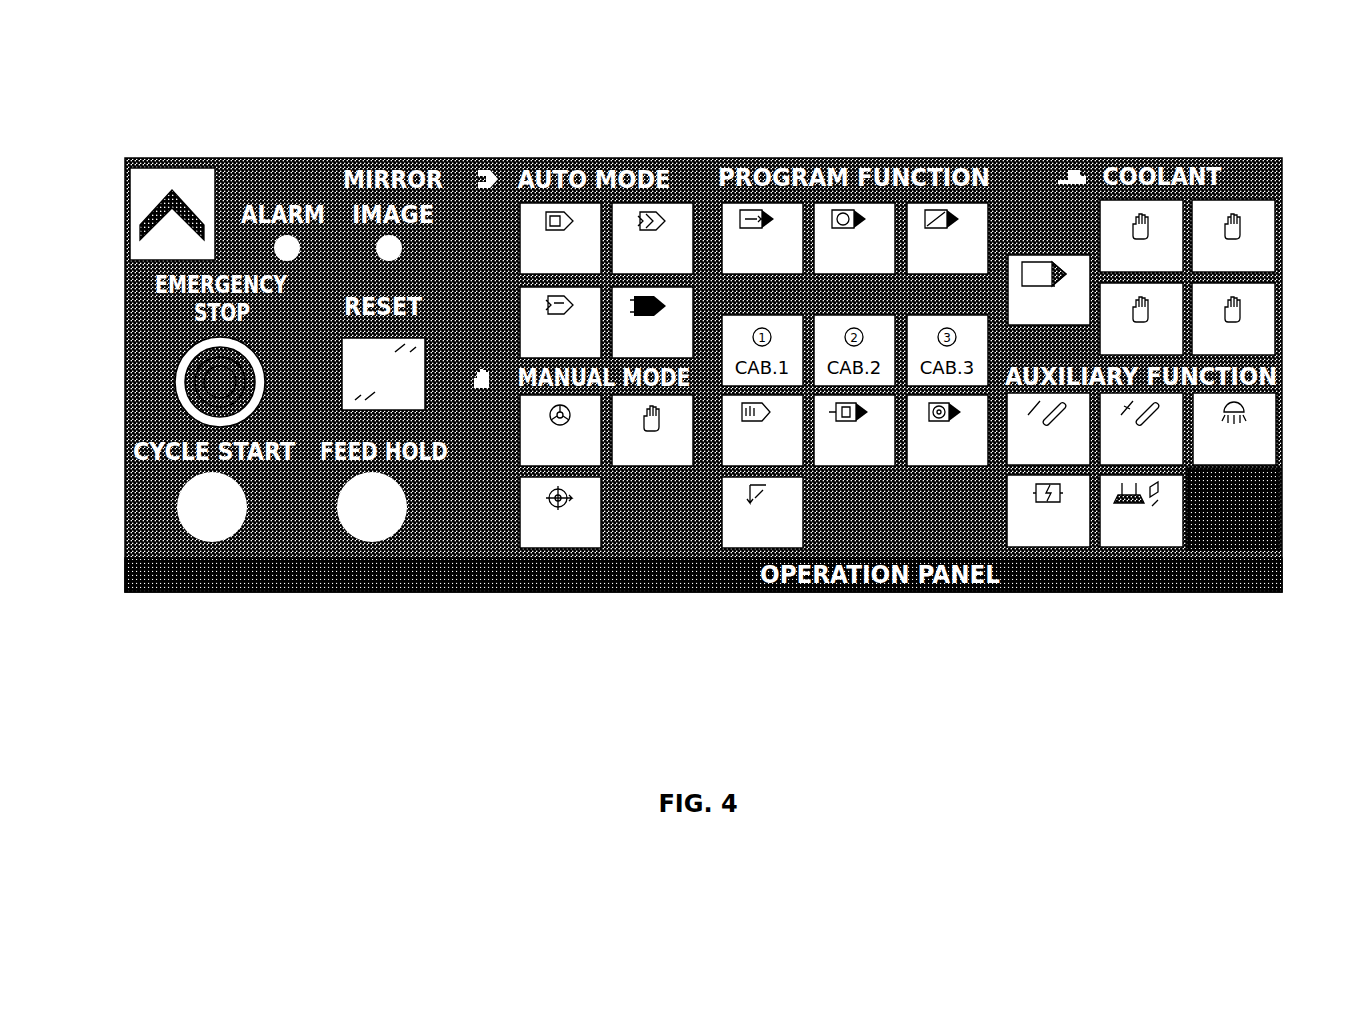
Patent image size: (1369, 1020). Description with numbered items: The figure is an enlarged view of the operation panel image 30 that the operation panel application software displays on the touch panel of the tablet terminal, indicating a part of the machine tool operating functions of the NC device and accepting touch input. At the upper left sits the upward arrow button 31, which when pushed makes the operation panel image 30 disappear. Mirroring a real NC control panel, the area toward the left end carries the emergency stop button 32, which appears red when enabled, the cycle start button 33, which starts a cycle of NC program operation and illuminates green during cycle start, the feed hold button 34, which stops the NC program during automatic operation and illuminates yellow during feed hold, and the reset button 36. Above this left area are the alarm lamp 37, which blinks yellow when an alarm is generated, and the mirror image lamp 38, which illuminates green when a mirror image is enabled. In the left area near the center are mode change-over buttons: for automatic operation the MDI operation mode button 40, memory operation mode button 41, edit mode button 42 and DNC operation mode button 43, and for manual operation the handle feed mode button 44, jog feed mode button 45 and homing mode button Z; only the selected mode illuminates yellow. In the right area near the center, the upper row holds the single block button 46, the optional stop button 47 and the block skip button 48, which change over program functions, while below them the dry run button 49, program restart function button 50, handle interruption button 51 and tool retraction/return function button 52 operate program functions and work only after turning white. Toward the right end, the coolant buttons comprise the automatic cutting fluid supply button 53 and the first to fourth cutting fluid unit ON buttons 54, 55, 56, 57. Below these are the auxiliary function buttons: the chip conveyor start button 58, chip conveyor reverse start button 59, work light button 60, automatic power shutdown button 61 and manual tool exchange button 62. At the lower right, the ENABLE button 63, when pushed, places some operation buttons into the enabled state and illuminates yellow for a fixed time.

The operation panel image 30 is at (1246, 158).
The upward arrow button 31 is at (160, 177).
The emergency stop button 32 is at (182, 373).
The cycle start button 33 is at (212, 512).
The feed hold button 34 is at (348, 508).
The reset button 36 is at (393, 387).
The alarm lamp 37 is at (282, 240).
The mirror image lamp 38 is at (376, 246).
The MDI operation mode button 40 is at (537, 214).
The memory operation mode button 41 is at (523, 307).
The edit mode button 42 is at (679, 214).
The DNC operation mode button 43 is at (632, 298).
The handle feed mode button 44 is at (568, 448).
The jog feed mode button 45 is at (634, 452).
The homing mode button Z is at (535, 520).
The single block button 46 is at (737, 214).
The optional stop button 47 is at (830, 212).
The block skip button 48 is at (948, 212).
The dry run button 49 is at (778, 447).
The program restart function button 50 is at (845, 450).
The handle interruption button 51 is at (935, 450).
The tool retraction/return function button 52 is at (745, 535).
The automatic cutting fluid supply button 53 is at (1083, 268).
The first cutting fluid unit ON button 54 is at (1128, 222).
The second cutting fluid unit ON button 55 is at (1213, 216).
The third cutting fluid unit ON button 56 is at (1157, 330).
The fourth cutting fluid unit ON button 57 is at (1263, 313).
The chip conveyor start button 58 is at (1050, 462).
The chip conveyor reverse start button 59 is at (1158, 437).
The work light button 60 is at (1277, 420).
The automatic power shutdown button 61 is at (1040, 517).
The manual tool exchange button 62 is at (1140, 530).
The ENABLE button 63 is at (1260, 527).